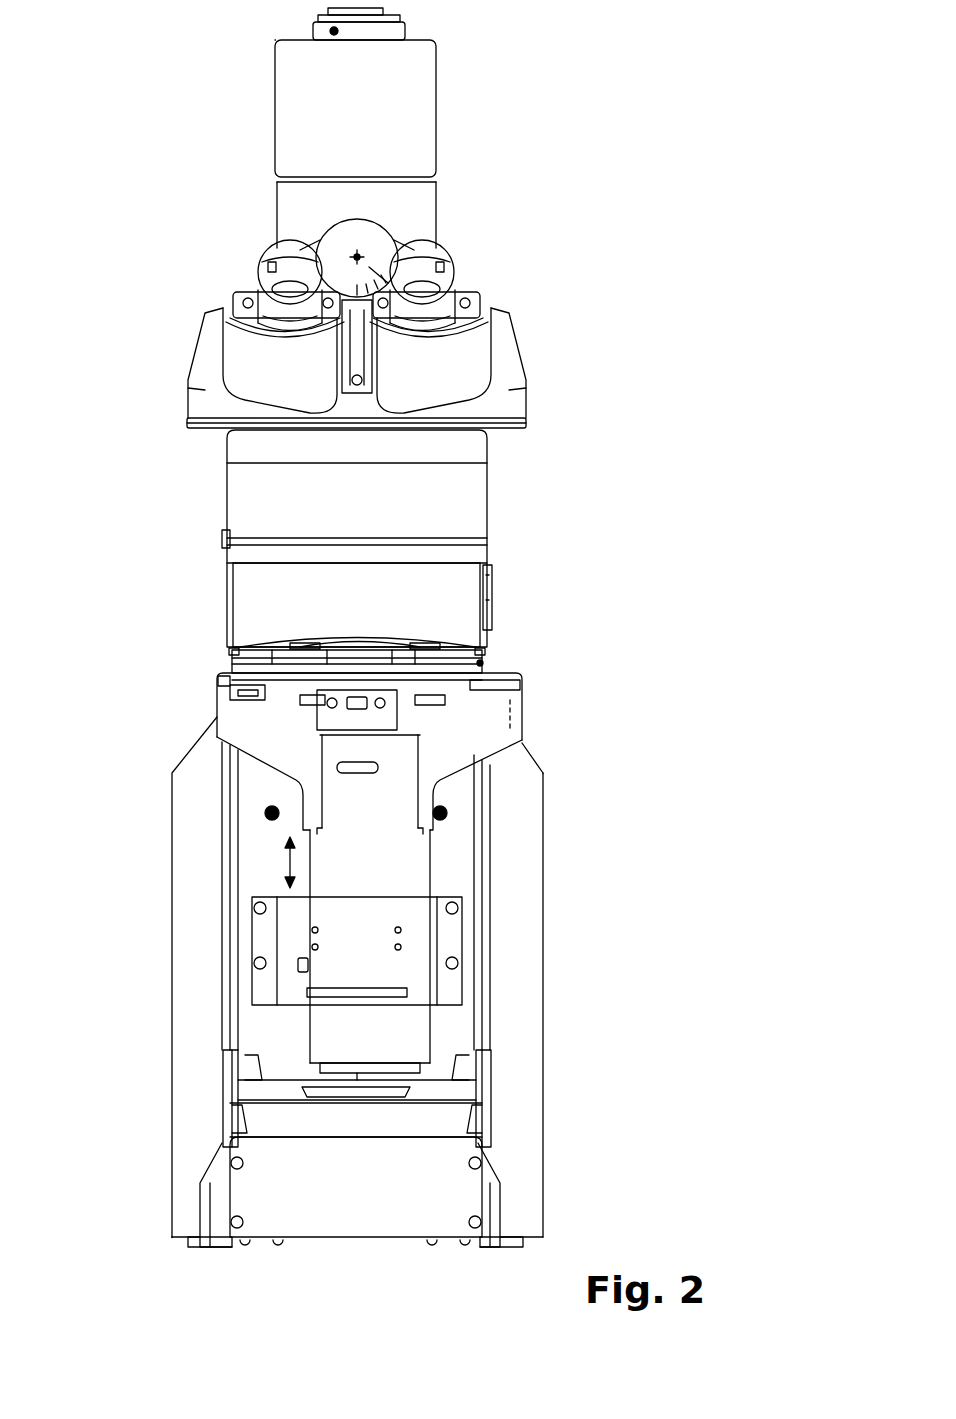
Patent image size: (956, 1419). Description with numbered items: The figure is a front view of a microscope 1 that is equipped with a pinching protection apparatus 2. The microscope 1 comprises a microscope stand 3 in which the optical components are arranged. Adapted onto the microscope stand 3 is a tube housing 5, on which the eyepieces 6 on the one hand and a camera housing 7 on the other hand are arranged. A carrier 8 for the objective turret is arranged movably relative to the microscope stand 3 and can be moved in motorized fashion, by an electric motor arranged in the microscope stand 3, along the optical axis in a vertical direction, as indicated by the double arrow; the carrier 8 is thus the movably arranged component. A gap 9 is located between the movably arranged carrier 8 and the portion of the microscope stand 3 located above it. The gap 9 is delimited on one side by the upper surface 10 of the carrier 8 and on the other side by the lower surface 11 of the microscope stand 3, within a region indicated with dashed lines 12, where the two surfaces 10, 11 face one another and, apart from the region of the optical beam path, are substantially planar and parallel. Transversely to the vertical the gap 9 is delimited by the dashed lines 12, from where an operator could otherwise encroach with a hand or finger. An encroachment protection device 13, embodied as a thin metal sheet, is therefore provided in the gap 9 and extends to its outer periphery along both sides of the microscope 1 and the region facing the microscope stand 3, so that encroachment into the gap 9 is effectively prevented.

The microscope 1 is at (603, 577).
The pinching protection apparatus 2 is at (200, 660).
The microscope stand 3 is at (429, 615).
The tube housing 5 is at (498, 347).
The eyepieces 6 is at (283, 272).
The camera housing 7 is at (373, 131).
The carrier 8 is at (497, 725).
The gap 9 is at (517, 677).
The upper surface 10 is at (423, 647).
The lower surface 11 is at (215, 675).
The dashed lines 12 is at (232, 653).
The encroachment protection device 13 is at (303, 647).